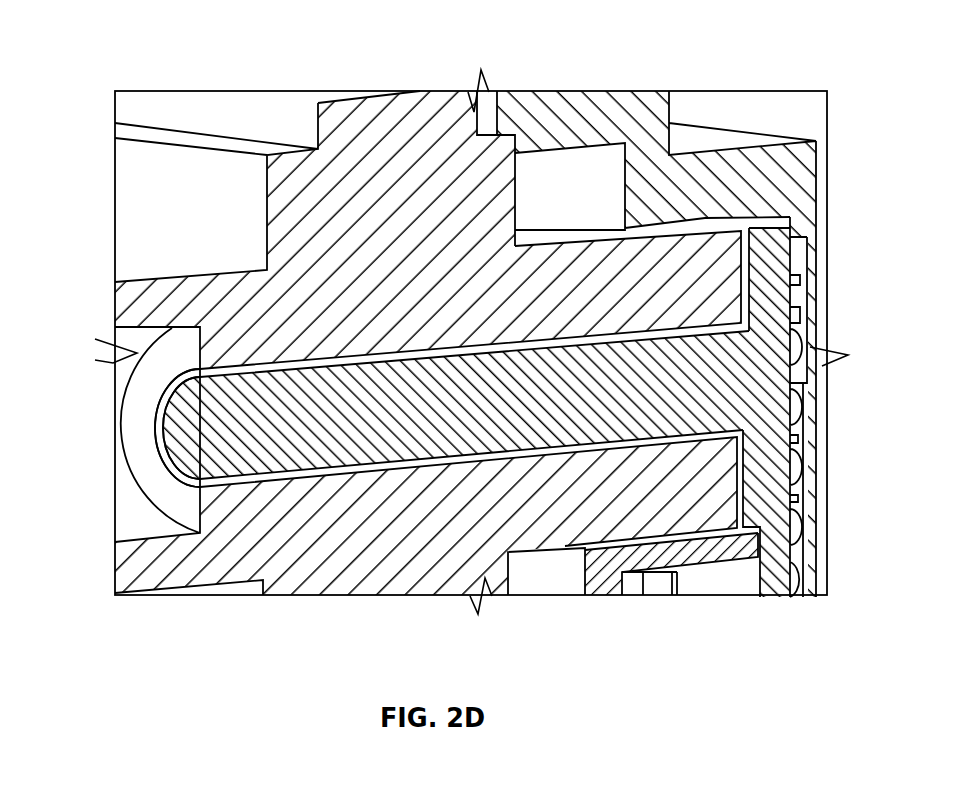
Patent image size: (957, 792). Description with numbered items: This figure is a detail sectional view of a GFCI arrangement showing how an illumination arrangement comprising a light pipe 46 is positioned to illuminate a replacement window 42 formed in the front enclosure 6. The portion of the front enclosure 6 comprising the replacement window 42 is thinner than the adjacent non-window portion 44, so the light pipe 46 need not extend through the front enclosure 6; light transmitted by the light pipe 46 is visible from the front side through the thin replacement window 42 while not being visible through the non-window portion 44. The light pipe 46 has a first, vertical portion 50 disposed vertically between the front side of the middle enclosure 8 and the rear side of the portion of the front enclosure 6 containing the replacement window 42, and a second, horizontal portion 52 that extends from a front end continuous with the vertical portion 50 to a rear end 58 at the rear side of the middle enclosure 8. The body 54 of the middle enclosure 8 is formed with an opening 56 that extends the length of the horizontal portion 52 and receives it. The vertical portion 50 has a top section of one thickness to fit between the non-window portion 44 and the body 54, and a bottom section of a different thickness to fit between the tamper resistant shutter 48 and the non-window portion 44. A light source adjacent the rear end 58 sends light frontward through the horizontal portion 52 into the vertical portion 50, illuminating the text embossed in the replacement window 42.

The front enclosure 6 is at (697, 198).
The middle enclosure 8 is at (318, 183).
The replacement window 42 is at (817, 283).
The non-window portion 44 is at (807, 170).
The light pipe 46 is at (478, 366).
The tamper resistant shutter 48 is at (546, 578).
The vertical portion 50 is at (763, 497).
The horizontal portion 52 is at (440, 413).
The body 54 is at (160, 320).
The opening 56 is at (593, 442).
The rear end 58 is at (173, 422).